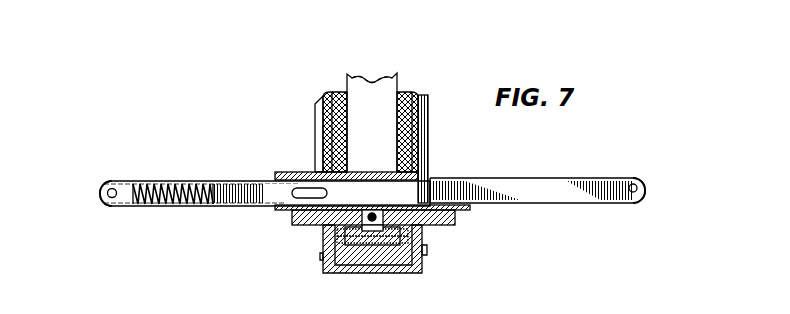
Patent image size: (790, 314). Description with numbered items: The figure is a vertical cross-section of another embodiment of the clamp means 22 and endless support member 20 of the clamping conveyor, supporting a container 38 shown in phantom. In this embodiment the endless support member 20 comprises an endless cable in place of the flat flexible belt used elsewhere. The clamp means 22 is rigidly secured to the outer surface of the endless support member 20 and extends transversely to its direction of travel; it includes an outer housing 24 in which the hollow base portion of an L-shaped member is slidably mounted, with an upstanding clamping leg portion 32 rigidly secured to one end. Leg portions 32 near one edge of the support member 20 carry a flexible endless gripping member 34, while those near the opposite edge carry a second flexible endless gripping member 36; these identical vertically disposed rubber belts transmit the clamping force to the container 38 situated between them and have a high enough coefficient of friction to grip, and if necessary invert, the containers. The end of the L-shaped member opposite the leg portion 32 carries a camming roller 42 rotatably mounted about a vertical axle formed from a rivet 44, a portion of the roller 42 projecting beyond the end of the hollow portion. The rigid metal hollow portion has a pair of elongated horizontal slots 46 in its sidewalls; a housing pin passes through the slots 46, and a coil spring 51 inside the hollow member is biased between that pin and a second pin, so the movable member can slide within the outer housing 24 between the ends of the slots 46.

The endless support member 20 is at (370, 225).
The clamp means 22 is at (197, 178).
The outer housing 24 is at (282, 172).
The leg portion 32 is at (316, 105).
The flexible endless gripping member 34 is at (400, 92).
The second flexible endless gripping member 36 is at (333, 92).
The container 38 is at (383, 135).
The roller 42 is at (98, 190).
The rivet 44 is at (112, 199).
The elongated horizontal slots 46 is at (320, 198).
The coil spring 51 is at (170, 206).